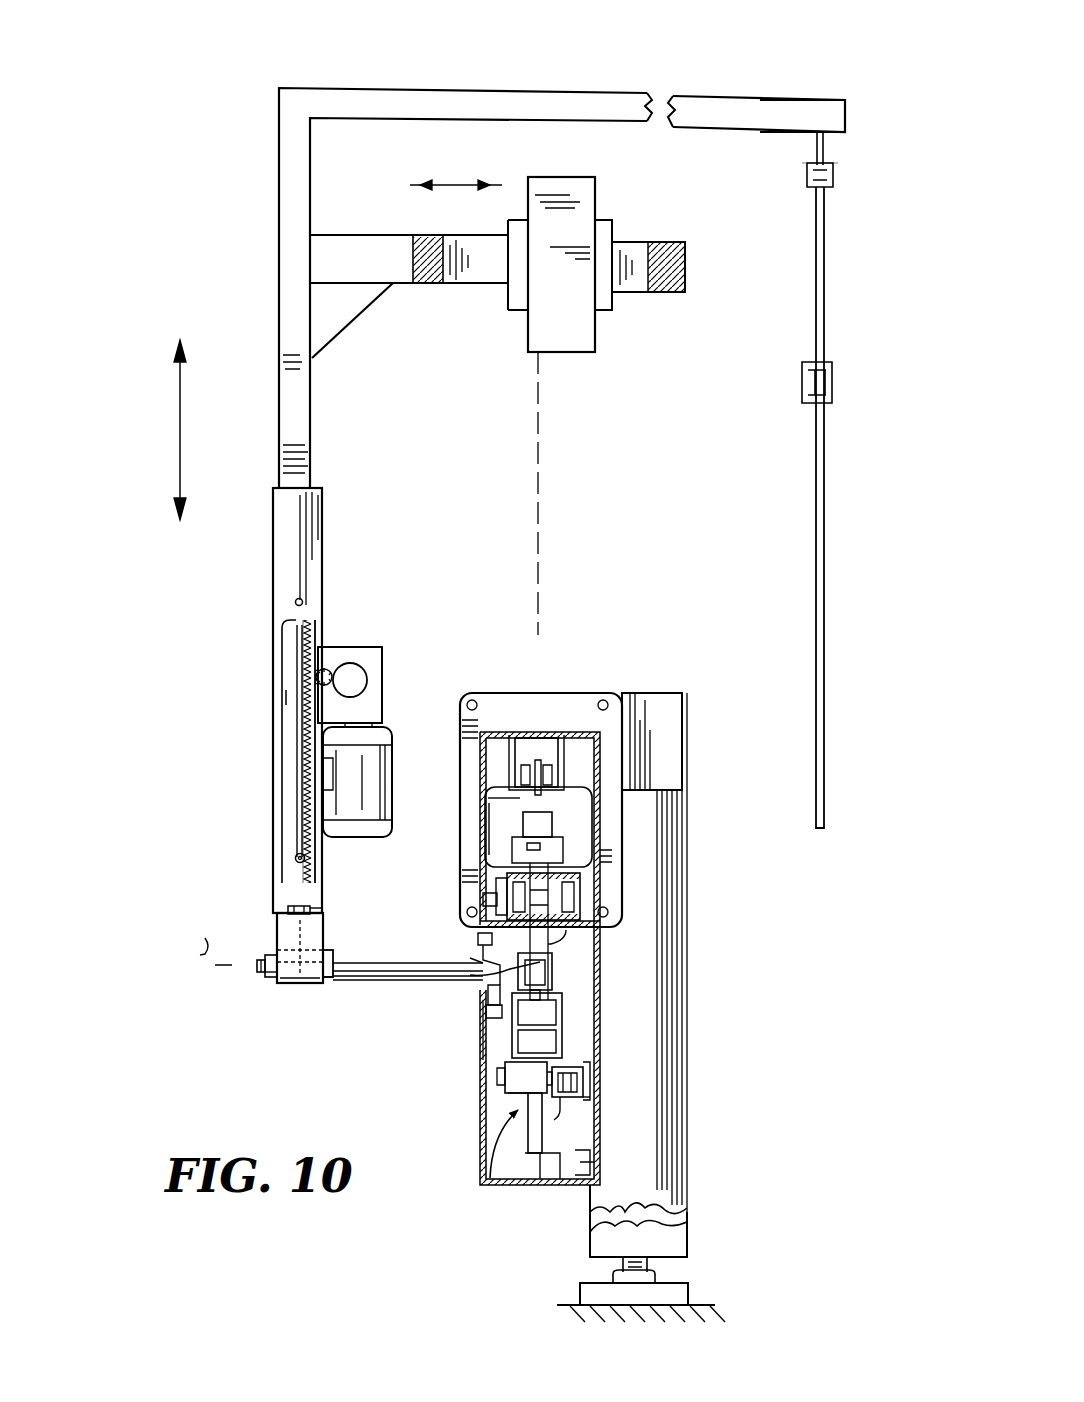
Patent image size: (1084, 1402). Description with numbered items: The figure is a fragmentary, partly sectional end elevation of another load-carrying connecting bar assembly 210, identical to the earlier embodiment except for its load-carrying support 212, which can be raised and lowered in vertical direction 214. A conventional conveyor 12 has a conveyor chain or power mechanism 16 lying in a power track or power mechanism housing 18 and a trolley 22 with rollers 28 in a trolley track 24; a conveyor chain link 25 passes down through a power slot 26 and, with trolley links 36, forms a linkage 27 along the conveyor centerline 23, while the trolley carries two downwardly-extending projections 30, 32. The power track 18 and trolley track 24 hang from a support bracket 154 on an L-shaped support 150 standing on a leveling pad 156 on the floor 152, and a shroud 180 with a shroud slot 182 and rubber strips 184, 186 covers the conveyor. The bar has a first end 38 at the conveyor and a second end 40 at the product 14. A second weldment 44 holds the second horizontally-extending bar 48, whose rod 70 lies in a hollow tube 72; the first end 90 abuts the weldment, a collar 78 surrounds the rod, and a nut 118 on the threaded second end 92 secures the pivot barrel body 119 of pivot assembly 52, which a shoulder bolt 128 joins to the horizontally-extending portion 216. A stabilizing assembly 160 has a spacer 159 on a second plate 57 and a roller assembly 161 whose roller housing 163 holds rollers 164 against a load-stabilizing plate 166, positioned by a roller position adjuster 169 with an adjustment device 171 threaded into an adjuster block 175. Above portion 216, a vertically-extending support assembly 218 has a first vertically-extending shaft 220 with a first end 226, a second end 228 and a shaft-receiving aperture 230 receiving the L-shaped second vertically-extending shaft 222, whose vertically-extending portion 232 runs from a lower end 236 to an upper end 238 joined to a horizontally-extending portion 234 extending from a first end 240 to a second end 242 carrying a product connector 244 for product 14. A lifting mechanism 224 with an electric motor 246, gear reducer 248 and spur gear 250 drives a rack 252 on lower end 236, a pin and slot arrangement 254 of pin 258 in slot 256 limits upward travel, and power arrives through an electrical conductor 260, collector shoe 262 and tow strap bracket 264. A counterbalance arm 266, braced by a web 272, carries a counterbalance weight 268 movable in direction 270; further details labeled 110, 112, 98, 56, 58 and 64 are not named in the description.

The load-carrying connecting bar assembly 210 is at (290, 56).
The first end of horizontally-extending portion 240 is at (336, 90).
The upper end of vertically-extending portion 238 is at (279, 118).
The second vertically-extending shaft 222 is at (278, 183).
The vertically-extending portion 232 is at (312, 425).
The horizontally-extending portion 234 is at (513, 96).
The second end of horizontally-extending portion 242 is at (836, 100).
The product connector 244 is at (812, 175).
The second end 40 is at (857, 172).
The product 14 is at (836, 610).
The counterbalance arm 266 is at (364, 238).
The direction 270 is at (468, 184).
The counterbalance weight 268 is at (592, 188).
The web 272 is at (350, 336).
The vertical direction 214 is at (180, 410).
The load-carrying support 212 is at (212, 766).
The vertically-extending support assembly 218 is at (333, 528).
The first vertically-extending shaft 220 is at (323, 555).
The second end of first vertically-extending shaft 228 is at (276, 484).
The pin 258 is at (302, 600).
The pin and slot arrangement 254 is at (270, 648).
The rack 252 is at (316, 642).
The slot 256 is at (300, 822).
The lower end of vertically-extending portion 236 is at (298, 868).
The shaft-receiving aperture 230 is at (286, 694).
The gear reducer 248 is at (380, 713).
The spur gear 250 is at (330, 672).
The lifting mechanism 224 is at (414, 690).
The electric motor 246 is at (392, 758).
The horizontally-extending portion 216 is at (277, 928).
The nut 112 is at (300, 902).
The shoulder bolt 128 is at (321, 906).
The first end of first vertically-extending shaft 226 is at (276, 910).
The fastener assembly 110 is at (195, 946).
The second end of rod 92 is at (268, 962).
The rod 70 is at (257, 966).
The nut 118 is at (270, 978).
The pivot assembly 52 is at (292, 986).
The pivot barrel body 119 is at (312, 988).
The spacer 98 is at (338, 980).
The collar 78 is at (331, 950).
The hollow tube 72 is at (361, 964).
The second horizontally-extending bar 48 is at (380, 980).
The support bracket 154 is at (640, 705).
The conveyor 12 is at (585, 775).
The first end 38 is at (665, 986).
The L-shaped support 150 is at (695, 945).
The leveling pad 156 is at (672, 1292).
The floor 152 is at (698, 1305).
The shroud 180 is at (490, 721).
The conveyor chain 16 is at (548, 740).
The conveyor power track 18 is at (527, 738).
The centerline 23 is at (540, 700).
The conveyor chain link 25 is at (558, 796).
The links 36 is at (546, 824).
The linkage 27 is at (500, 798).
The power slot 26 is at (494, 805).
The trolley track 24 is at (582, 896).
The rollers 28 is at (497, 881).
The trolley 22 is at (568, 930).
The shroud slot 182 is at (487, 915).
The rubber strip 184 is at (484, 950).
The connecting link 58 is at (555, 960).
The coupling 56 is at (555, 960).
The coupling insert 64 is at (555, 980).
The downwardly-extending projection 30 is at (558, 975).
The first end of rod 90 is at (486, 988).
The rubber strip 186 is at (487, 1010).
The second plate 57 is at (551, 1025).
The spacer 159 is at (565, 1040).
The second weldment 44 is at (510, 1005).
The adjuster block 175 is at (520, 1098).
The downwardly-extending projection 32 is at (505, 1072).
The adjustment device 171 is at (512, 1082).
The rollers 164 is at (580, 1081).
The roller assembly 161 is at (610, 1108).
The stabilizing assembly 160 is at (600, 1100).
The load-stabilizing plate 166 is at (590, 1102).
The roller housing 163 is at (556, 1123).
The roller position adjuster 169 is at (502, 1172).
The electrical conductor 260 is at (600, 1176).
The collector shoe 262 is at (556, 1186).
The tow strap bracket 264 is at (530, 1188).